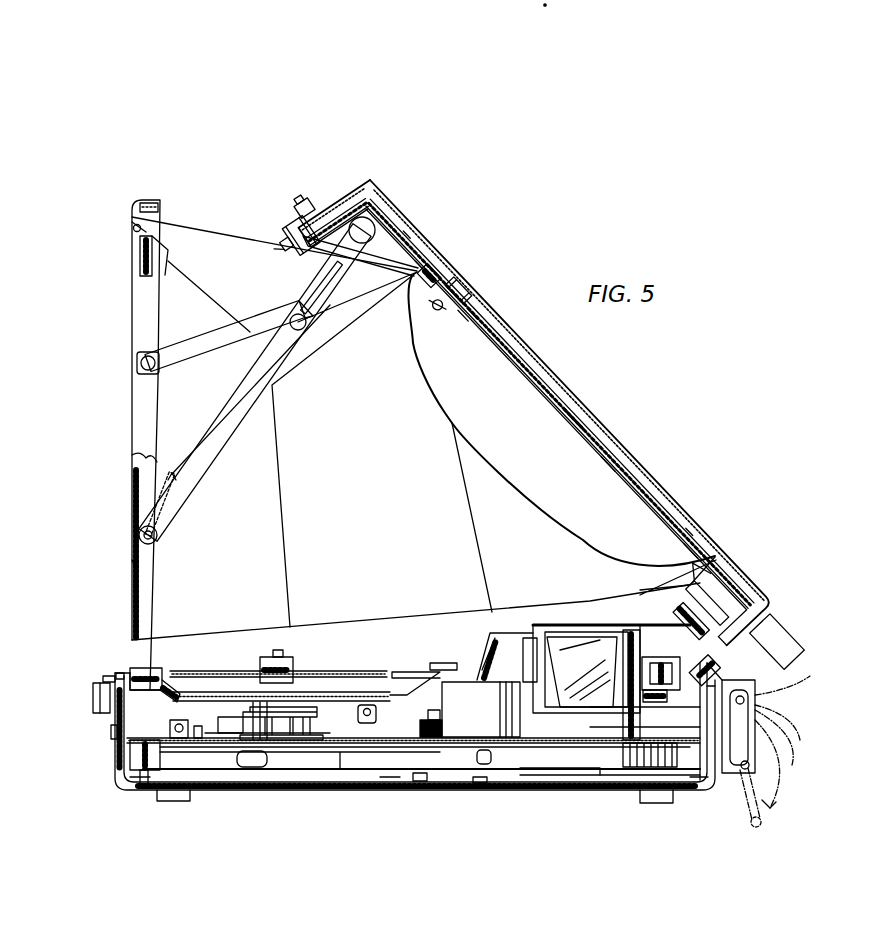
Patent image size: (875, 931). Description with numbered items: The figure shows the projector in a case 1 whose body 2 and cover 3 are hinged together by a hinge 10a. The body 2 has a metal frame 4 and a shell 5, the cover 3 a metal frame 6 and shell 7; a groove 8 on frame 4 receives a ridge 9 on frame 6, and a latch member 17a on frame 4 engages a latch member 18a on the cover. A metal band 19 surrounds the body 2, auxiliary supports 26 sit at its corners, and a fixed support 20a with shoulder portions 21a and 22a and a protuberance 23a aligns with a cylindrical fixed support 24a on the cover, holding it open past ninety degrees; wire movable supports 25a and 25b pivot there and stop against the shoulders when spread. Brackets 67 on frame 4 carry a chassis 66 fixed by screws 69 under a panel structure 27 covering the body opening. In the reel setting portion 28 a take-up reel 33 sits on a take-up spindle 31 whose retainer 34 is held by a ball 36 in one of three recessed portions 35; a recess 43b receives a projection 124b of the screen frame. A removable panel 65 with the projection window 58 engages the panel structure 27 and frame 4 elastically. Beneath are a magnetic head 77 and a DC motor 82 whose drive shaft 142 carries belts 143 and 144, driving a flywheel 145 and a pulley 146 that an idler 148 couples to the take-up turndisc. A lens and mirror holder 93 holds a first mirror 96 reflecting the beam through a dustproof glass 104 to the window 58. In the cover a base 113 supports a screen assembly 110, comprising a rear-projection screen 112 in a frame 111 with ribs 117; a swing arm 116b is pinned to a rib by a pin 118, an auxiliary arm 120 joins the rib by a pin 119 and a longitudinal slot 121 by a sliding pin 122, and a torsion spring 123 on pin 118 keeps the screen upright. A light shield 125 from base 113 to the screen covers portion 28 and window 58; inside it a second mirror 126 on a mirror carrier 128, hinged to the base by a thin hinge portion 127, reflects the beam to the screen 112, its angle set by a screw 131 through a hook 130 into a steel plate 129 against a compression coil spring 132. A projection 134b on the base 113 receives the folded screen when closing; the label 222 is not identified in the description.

The copying apparatus 1 is at (518, 242).
The base housing 2 is at (110, 790).
The lid / cover 3 is at (371, 178).
The housing front wall 4 is at (112, 672).
The base plate 5 is at (280, 790).
The hinge block 6 is at (297, 210).
The cover panel 7 is at (425, 228).
The housing edge member 8 is at (116, 672).
The hinge pin 9 is at (292, 230).
The latch member 10a is at (750, 667).
The handle tab 17a is at (92, 712).
The hinge bracket 18a is at (316, 192).
The wall fastener 19 is at (112, 736).
The latch lever position 20a is at (755, 698).
The latch lever position 21a is at (758, 690).
The latch pivot 22a is at (735, 790).
The latch lever position 23a is at (757, 720).
The latch catch block 24a is at (782, 620).
The latch lever position 25a is at (758, 735).
The latch lever end position 25b is at (770, 808).
The foot 26 is at (174, 808).
The guide member 27 is at (428, 662).
The chute 28 is at (172, 672).
The platen line 31 is at (275, 640).
The platen plate 33 is at (200, 670).
The bearing block 34 is at (262, 660).
The post 35 is at (285, 658).
The bearing 36 is at (318, 668).
The guide wall 43b is at (148, 668).
The lens housing 58 is at (540, 622).
The sloped wall 65 is at (498, 630).
The motor bracket 66 is at (190, 742).
The fastener 67 is at (132, 792).
The bolt 69 is at (150, 780).
The lamp block 77 is at (660, 655).
The power unit 82 is at (481, 709).
The support post 93 is at (523, 655).
The housing wall 96 is at (600, 640).
The lens / mirror 104 is at (574, 632).
The hinge point 110 is at (124, 236).
The upright post 111 is at (136, 197).
The post bracket 112 is at (139, 268).
The cover wall 113 is at (390, 206).
The support arm 116b is at (268, 387).
The post section 117 is at (160, 445).
The lower pivot 118 is at (162, 533).
The link pivot 119 is at (154, 368).
The link arm 120 is at (186, 345).
The slot 121 is at (320, 278).
The pivot pin 122 is at (306, 330).
The link 123 is at (180, 470).
The post lower end 124b is at (132, 672).
The cable 125 is at (232, 225).
The cover inner wall 126 is at (608, 463).
The cover end wall 127 is at (712, 538).
The cover insulation 128 is at (590, 415).
The bracket 129 is at (488, 298).
The pin 130 is at (442, 312).
The bracket plate 131 is at (462, 280).
The bracket 132 is at (442, 262).
The curtain edge 134b is at (683, 556).
The roller 142 is at (478, 786).
The drive plate 143 is at (528, 772).
The drive rod 144 is at (340, 768).
The lower rod 145 is at (575, 777).
The roller 146 is at (248, 768).
The switch block 148 is at (213, 719).
The latch bracket 222 is at (735, 590).